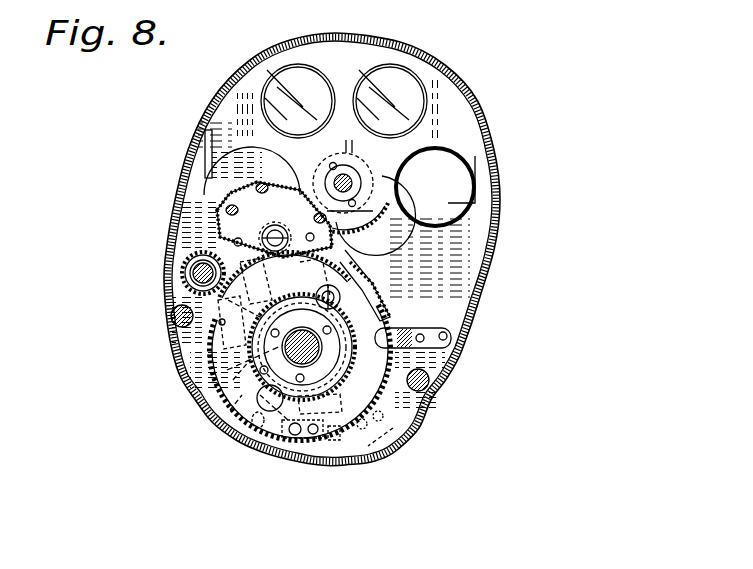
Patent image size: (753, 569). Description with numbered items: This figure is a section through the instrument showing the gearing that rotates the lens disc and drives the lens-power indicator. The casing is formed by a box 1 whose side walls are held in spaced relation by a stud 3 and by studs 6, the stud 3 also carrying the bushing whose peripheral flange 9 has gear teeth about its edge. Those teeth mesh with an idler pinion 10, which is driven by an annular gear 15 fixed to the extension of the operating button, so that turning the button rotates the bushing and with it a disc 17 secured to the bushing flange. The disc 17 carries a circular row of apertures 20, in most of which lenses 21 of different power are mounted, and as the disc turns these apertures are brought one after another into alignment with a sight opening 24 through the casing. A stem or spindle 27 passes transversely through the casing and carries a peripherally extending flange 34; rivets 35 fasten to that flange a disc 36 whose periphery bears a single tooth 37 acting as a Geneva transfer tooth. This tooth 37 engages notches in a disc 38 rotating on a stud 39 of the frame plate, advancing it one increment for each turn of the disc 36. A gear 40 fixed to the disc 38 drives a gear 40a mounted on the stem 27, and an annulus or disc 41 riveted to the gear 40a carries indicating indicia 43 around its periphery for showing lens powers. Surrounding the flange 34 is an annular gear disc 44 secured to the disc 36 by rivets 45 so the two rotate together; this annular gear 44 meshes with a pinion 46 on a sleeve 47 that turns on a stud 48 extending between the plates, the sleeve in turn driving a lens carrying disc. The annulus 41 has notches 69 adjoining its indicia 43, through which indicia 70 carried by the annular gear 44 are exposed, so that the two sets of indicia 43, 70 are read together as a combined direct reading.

The box 1 is at (478, 294).
The stud 3 is at (351, 191).
The studs 6 is at (430, 384).
The peripheral flange 9 is at (358, 232).
The idler pinion 10 is at (353, 267).
The annular gear 15 is at (342, 430).
The disc 17 is at (442, 105).
The apertures 20 is at (222, 164).
The lenses 21 is at (390, 80).
The sight opening 24 is at (490, 203).
The stem or spindle 27 is at (227, 370).
The peripherally extending flange 34 is at (315, 351).
The rivets 35 is at (302, 347).
The disc 36 is at (393, 326).
The single tooth 37 is at (342, 292).
The disc 38 is at (216, 228).
The stud 39 is at (275, 232).
The gear 40 is at (220, 224).
The gear 40a is at (252, 422).
The annulus or disc 41 is at (393, 428).
The indicating indicia 43 is at (268, 433).
The annular gear disc 44 is at (335, 440).
The rivets 45 is at (320, 405).
The pinion 46 is at (188, 264).
The sleeve 47 is at (182, 285).
The stud 48 is at (172, 316).
The notches 69 is at (373, 432).
The indicia 70 is at (292, 460).